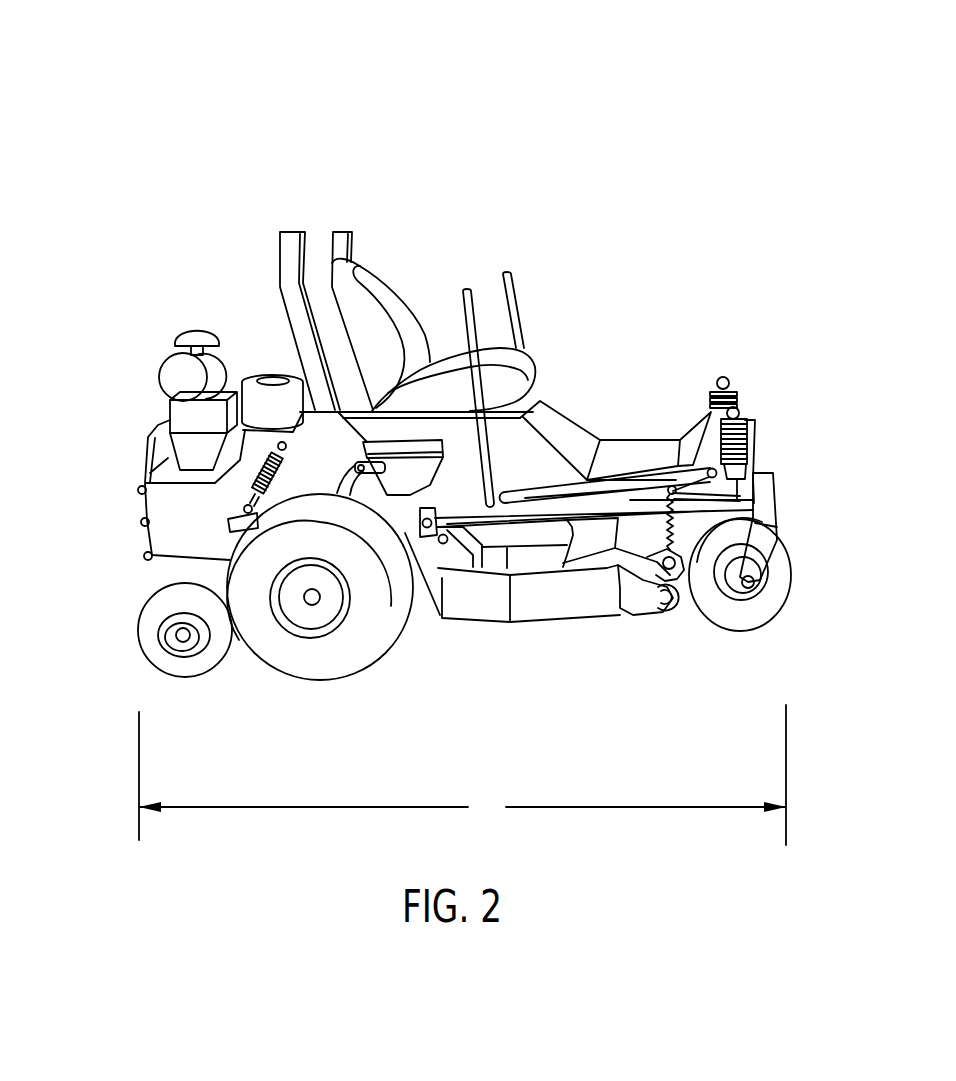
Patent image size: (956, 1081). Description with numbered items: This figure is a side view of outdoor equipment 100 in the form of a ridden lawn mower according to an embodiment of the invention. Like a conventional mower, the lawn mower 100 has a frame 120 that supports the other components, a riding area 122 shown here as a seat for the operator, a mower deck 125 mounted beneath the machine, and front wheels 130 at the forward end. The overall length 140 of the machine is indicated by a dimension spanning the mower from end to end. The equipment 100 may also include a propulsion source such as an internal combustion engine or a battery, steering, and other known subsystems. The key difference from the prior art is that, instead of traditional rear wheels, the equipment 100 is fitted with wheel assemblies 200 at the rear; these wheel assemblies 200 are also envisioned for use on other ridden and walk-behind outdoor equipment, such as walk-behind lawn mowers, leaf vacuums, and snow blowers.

The outdoor equipment 100 is at (613, 112).
The frame 120 is at (571, 373).
The riding area 122 is at (428, 294).
The mower deck 125 is at (540, 610).
The front wheels 130 is at (780, 575).
The overall length 140 is at (462, 775).
The wheel assemblies 200 is at (124, 668).